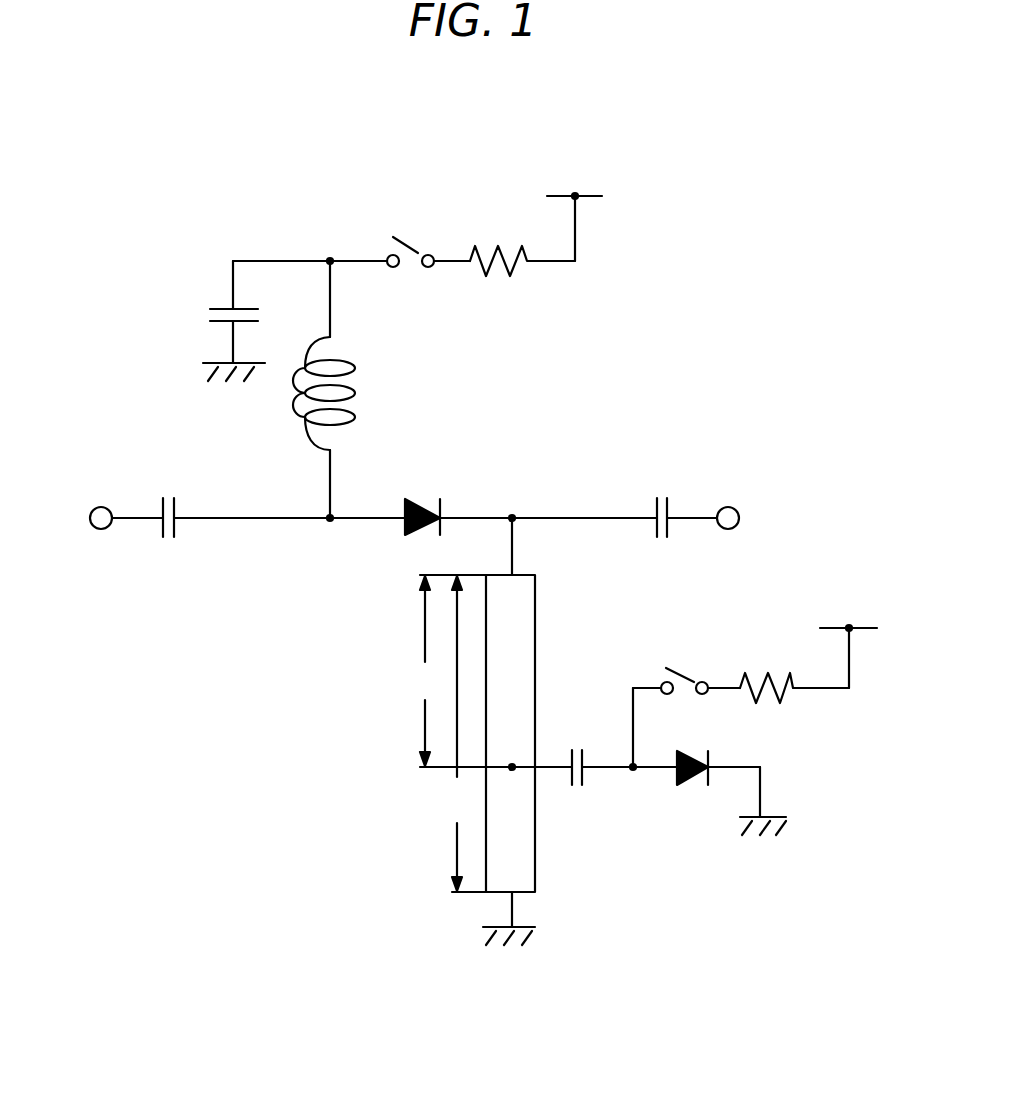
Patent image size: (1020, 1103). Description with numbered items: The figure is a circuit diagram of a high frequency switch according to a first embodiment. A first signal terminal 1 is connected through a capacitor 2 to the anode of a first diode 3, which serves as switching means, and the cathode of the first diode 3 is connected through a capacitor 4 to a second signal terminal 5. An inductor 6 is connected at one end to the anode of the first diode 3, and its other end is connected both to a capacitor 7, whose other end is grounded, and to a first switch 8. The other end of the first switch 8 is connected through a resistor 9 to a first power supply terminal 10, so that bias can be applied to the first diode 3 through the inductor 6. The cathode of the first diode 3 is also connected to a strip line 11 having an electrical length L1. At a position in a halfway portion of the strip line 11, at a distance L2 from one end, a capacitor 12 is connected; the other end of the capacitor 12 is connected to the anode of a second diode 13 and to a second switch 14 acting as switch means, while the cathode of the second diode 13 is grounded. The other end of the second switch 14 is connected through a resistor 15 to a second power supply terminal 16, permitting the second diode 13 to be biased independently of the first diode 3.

The first signal terminal 1 is at (101, 507).
The capacitor 2 is at (165, 540).
The first diode 3 is at (418, 500).
The capacitor 4 is at (663, 496).
The second signal terminal 5 is at (736, 508).
The inductor 6 is at (355, 411).
The capacitor 7 is at (210, 310).
The first switch 8 is at (406, 236).
The resistor 9 is at (482, 232).
The first power supply terminal 10 is at (592, 195).
The strip line 11 is at (537, 838).
The capacitor 12 is at (576, 746).
The second diode 13 is at (690, 785).
The second switch 14 is at (682, 669).
The resistor 15 is at (783, 696).
The second power supply terminal 16 is at (831, 628).